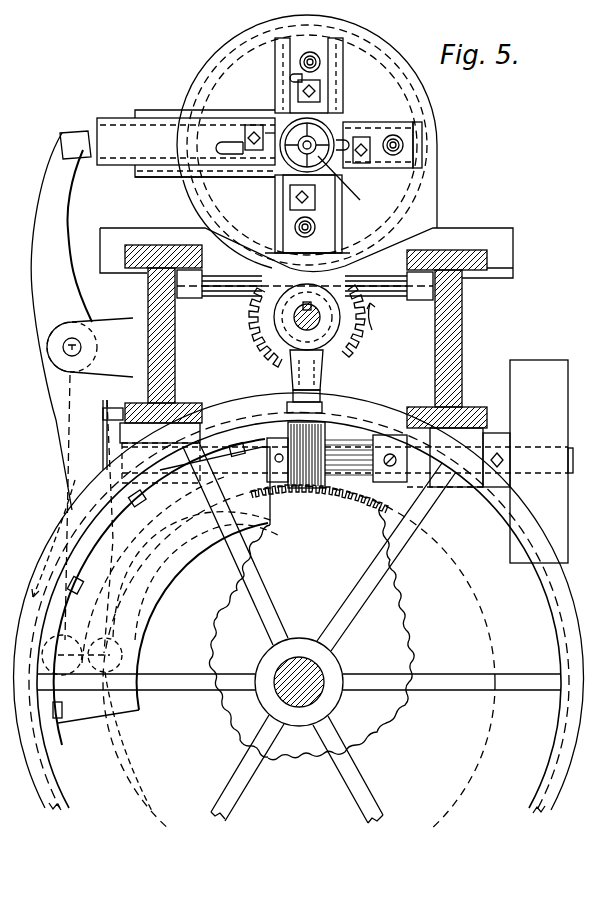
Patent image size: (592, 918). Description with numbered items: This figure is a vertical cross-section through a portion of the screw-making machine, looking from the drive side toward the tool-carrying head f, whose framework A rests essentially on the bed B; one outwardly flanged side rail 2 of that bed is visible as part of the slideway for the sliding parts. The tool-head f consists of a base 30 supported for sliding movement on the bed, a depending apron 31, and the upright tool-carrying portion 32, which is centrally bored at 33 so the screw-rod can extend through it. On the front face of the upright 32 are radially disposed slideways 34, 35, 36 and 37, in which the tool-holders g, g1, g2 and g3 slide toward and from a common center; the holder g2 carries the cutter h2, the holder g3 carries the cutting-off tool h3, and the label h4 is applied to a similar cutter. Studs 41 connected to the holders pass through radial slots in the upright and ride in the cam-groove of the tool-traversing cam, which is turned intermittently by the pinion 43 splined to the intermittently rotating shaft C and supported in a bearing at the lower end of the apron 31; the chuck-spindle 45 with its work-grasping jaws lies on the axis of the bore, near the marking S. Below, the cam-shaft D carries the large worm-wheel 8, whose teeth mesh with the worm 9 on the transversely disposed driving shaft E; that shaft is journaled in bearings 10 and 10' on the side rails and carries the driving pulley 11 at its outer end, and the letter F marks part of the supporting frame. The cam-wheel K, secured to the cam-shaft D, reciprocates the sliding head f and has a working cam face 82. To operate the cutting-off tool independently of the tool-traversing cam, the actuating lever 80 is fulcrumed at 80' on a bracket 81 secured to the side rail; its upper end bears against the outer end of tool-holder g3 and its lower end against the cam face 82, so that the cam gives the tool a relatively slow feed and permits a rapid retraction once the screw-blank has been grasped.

The upright or tool-carrying portion 32 is at (438, 124).
The tool-carrying slide or holder g is at (276, 48).
The studs 41 is at (312, 47).
The slideway 34 is at (330, 74).
The tool-carrying slide or holder g3 is at (186, 143).
The cutting-off tool h3 is at (232, 145).
The slideway 37 is at (170, 173).
The recess or bore 33 is at (283, 122).
The tool-carrying head f is at (224, 81).
The tool-carrying slide or holder g1 is at (415, 148).
The block h4 is at (348, 136).
The slideway 35 is at (378, 124).
The tool-carrying slide or holder g2 is at (308, 215).
The cutting-tool h2 is at (282, 196).
The slideway 36 is at (336, 244).
The hub wheel S is at (307, 145).
The chuck-spindle 45 is at (347, 183).
The base 30 is at (445, 240).
The left column F is at (172, 344).
The framework A is at (152, 428).
The side rail 2 is at (462, 324).
The bed B is at (462, 355).
The pinion 43 is at (250, 318).
The intermittently rotating shaft C is at (275, 330).
The depending portion or apron 31 is at (292, 360).
The driving shaft E is at (340, 440).
The bearing 10' is at (182, 453).
The worm 9 is at (290, 456).
The bearing 10 is at (446, 473).
The driving pulley 11 is at (541, 461).
The cam-wheel K is at (562, 606).
The cam-shaft D is at (298, 657).
The worm-wheel 8 is at (299, 657).
The actuating lever 80 is at (50, 320).
The bracket 81 is at (90, 479).
The fulcrum 80' is at (44, 357).
The cam face 82 is at (110, 583).